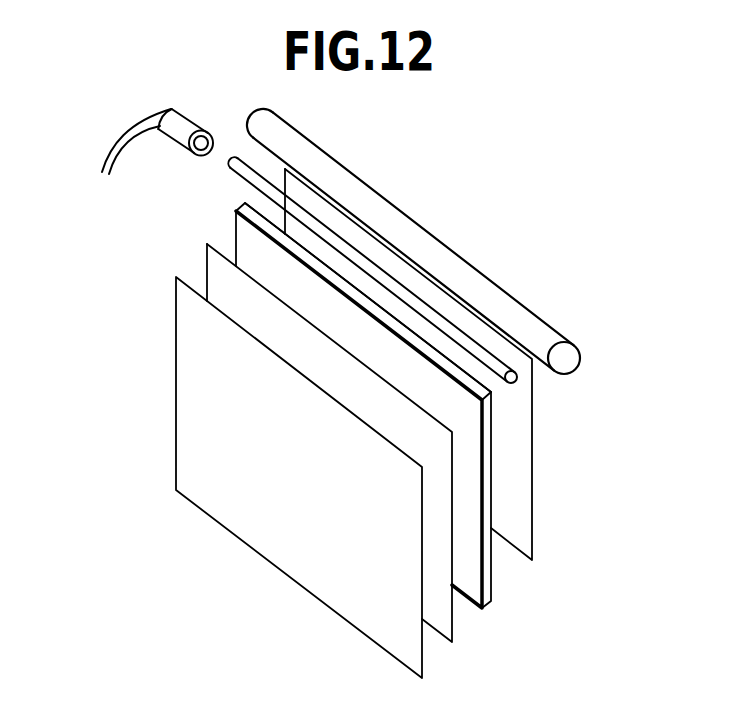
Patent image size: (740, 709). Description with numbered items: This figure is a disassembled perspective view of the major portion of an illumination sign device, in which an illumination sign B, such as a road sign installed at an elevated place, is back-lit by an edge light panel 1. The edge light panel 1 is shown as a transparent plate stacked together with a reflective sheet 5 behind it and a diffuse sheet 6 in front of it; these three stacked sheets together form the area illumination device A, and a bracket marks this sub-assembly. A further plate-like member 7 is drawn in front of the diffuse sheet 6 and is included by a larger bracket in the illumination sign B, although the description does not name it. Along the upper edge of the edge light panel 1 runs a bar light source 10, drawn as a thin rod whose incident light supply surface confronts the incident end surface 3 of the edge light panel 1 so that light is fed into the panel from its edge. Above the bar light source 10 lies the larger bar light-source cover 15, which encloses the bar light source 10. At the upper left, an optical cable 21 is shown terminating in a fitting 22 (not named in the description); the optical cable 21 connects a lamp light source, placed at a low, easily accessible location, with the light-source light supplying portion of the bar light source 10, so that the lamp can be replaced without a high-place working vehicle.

The edge light panel 1 is at (492, 485).
The incident end surface 3 is at (252, 216).
The reflective sheet 5 is at (518, 452).
The diffuse sheet 6 is at (453, 537).
The cover plate 7 is at (421, 650).
The bar light source 10 is at (500, 365).
The bar light-source cover 15 is at (432, 232).
The optical cable 21 is at (100, 158).
The connector 22 is at (176, 133).
The area illumination device A is at (428, 405).
The illumination sign B is at (439, 423).